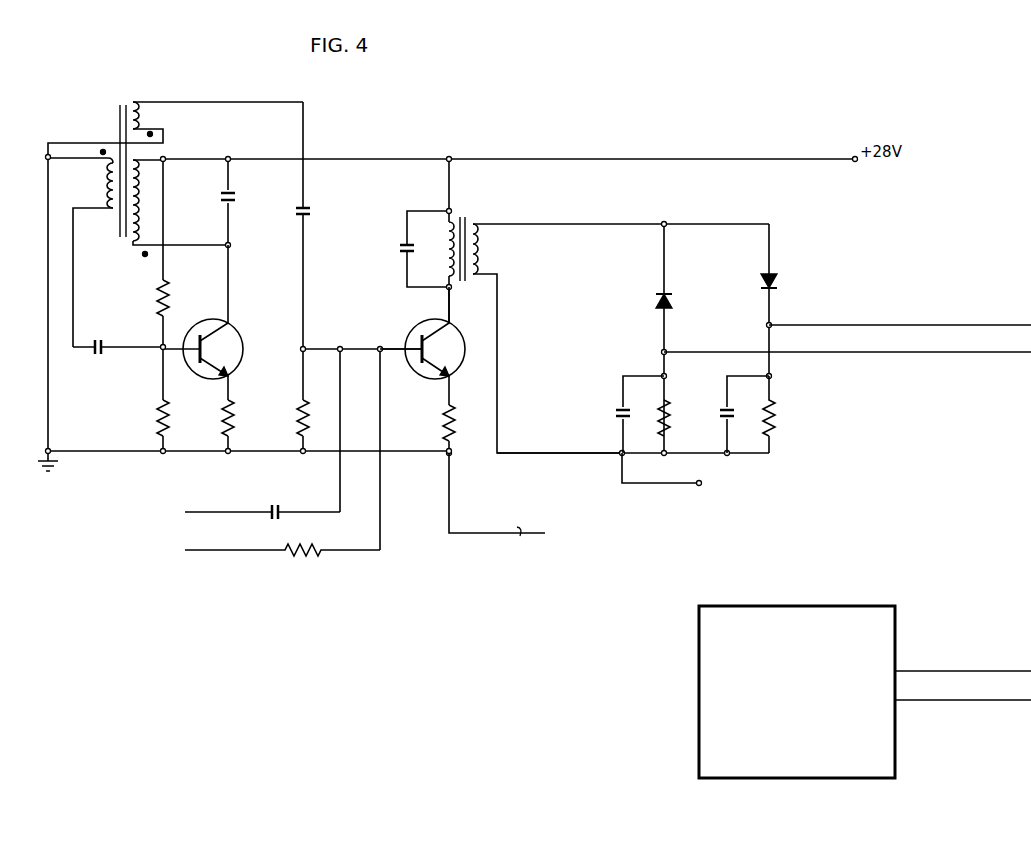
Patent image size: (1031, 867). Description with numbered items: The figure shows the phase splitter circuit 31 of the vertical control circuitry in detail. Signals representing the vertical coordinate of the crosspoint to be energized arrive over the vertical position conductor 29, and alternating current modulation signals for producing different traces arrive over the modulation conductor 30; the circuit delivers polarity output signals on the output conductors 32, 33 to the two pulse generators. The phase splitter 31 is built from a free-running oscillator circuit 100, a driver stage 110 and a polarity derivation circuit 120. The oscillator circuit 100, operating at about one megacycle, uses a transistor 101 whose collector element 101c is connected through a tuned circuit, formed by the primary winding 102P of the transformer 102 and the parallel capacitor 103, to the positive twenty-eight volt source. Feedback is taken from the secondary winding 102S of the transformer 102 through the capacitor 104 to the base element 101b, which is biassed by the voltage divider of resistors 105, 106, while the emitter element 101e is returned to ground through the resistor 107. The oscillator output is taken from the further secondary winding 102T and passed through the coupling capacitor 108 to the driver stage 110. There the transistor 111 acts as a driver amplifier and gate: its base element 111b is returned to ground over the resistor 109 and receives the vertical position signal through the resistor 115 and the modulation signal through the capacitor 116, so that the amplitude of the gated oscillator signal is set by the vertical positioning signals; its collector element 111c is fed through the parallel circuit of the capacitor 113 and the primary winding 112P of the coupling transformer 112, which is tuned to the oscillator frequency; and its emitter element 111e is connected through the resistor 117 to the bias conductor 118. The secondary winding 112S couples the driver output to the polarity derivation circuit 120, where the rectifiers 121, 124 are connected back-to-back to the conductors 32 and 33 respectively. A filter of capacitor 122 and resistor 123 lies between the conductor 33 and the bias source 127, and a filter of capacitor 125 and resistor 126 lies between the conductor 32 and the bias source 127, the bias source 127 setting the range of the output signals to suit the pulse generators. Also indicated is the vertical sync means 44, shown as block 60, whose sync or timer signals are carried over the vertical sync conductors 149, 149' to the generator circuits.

The phase splitter circuit 31 is at (699, 69).
The free-running oscillator circuit 100 is at (243, 257).
The driver stage 110 is at (569, 323).
The polarity derivation circuit 120 is at (764, 302).
The alternating current modulation conductor 30 is at (244, 510).
The vertical position conductor 29 is at (215, 558).
The vertical sync means 44 is at (797, 692).
The vertical sync block 60 is at (797, 692).
The transistor 101 is at (196, 323).
The base element 101b is at (186, 352).
The collector element 101c is at (222, 328).
The emitter element 101e is at (199, 379).
The transformer 102 is at (175, 224).
The secondary winding 102T is at (147, 120).
The primary winding 102P is at (148, 190).
The secondary winding 102S is at (103, 178).
The capacitor 103 is at (239, 199).
The capacitor 104 is at (114, 338).
The resistor 105 is at (167, 295).
The resistor 106 is at (158, 416).
The resistor 107 is at (222, 418).
The coupling capacitor 108 is at (322, 210).
The resistor 109 is at (298, 417).
The transistor member 111 is at (437, 346).
The base element 111b is at (412, 341).
The collector element 111c is at (454, 336).
The emitter element 111e is at (446, 368).
The coupling transformer 112 is at (588, 306).
The primary winding 112P is at (445, 250).
The secondary winding 112S is at (481, 246).
The capacitor 113 is at (404, 258).
The resistor 115 is at (306, 558).
The capacitor 116 is at (273, 518).
The resistor 117 is at (446, 424).
The bias conductor 118 is at (452, 491).
The rectifier 121 is at (775, 286).
The capacitor 122 is at (616, 412).
The resistor 123 is at (666, 414).
The rectifier 124 is at (667, 302).
The capacitor 125 is at (738, 413).
The resistor 126 is at (773, 418).
The bias source 127 is at (675, 482).
The output conductor 32 is at (860, 326).
The output conductor 33 is at (860, 353).
The vertical sync conductor 149 is at (963, 663).
The sync conductor 149' is at (963, 693).